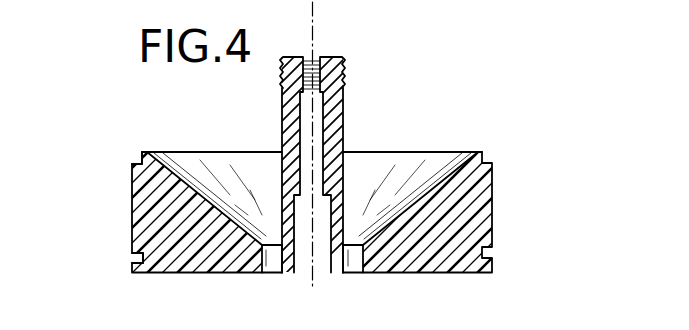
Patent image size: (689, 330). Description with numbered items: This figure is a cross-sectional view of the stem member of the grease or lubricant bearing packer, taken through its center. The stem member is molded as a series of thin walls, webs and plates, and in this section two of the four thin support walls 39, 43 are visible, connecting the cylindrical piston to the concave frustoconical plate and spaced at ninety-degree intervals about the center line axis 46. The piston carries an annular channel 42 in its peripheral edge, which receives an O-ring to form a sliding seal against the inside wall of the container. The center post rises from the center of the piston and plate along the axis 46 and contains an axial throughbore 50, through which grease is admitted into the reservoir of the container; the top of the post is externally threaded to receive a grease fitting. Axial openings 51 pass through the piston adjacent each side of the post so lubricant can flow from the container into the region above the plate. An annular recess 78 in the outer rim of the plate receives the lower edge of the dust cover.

The thin support wall 39 is at (422, 258).
The annular channel 42 is at (137, 257).
The thin support wall 43 is at (188, 237).
The center line axis 46 is at (313, 41).
The axial throughbore 50 is at (320, 126).
The axial openings 51 is at (272, 273).
The annular recess 78 is at (140, 162).